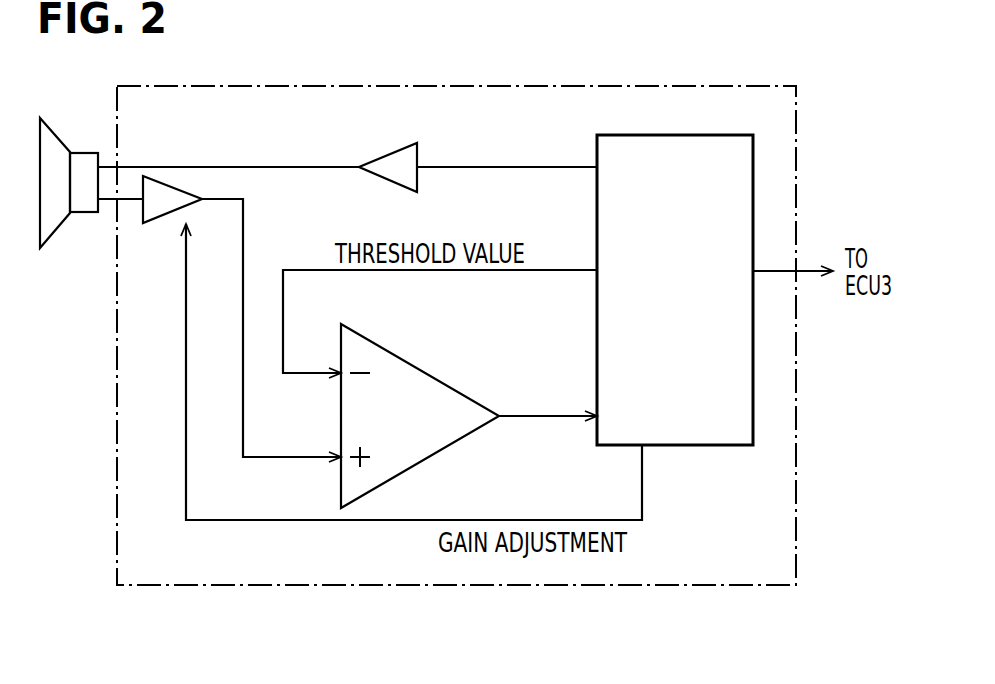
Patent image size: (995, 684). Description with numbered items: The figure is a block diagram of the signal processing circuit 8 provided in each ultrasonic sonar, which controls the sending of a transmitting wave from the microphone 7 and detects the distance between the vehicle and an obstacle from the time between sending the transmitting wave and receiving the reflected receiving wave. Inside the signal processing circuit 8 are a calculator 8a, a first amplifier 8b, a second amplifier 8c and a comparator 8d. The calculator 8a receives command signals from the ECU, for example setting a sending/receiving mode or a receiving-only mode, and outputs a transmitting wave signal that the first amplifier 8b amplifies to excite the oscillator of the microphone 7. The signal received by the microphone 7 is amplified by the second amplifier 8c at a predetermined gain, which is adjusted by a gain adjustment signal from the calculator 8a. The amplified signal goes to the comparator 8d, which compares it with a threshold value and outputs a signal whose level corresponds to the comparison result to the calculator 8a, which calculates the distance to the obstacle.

The microphone 7 is at (80, 152).
The signal processing circuit 8 is at (738, 592).
The calculator 8a is at (733, 446).
The first amplifier 8b is at (391, 154).
The second amplifier 8c is at (150, 224).
The comparator 8d is at (395, 355).